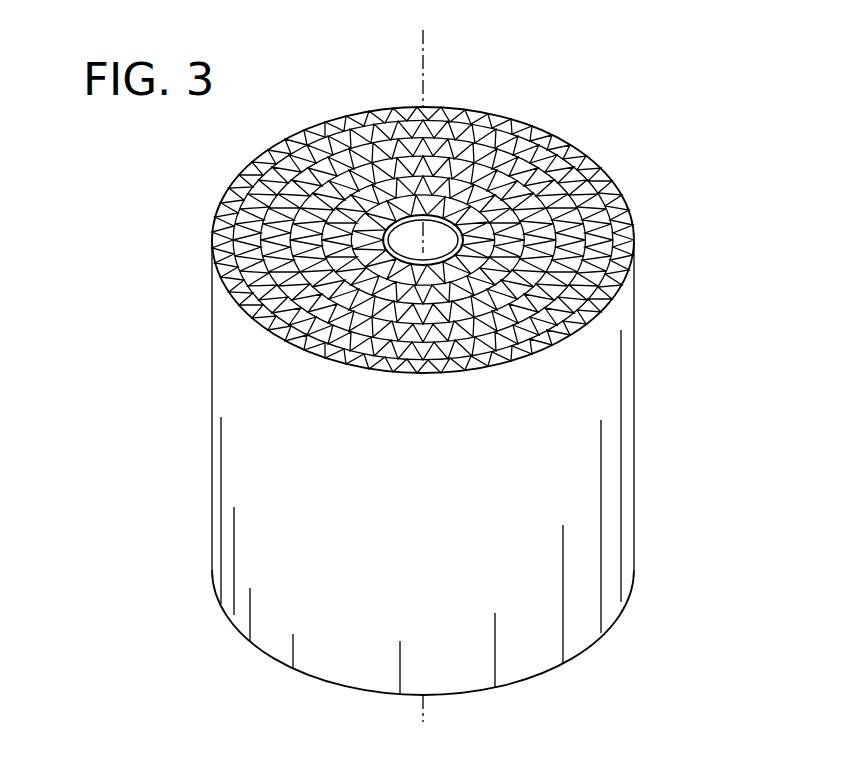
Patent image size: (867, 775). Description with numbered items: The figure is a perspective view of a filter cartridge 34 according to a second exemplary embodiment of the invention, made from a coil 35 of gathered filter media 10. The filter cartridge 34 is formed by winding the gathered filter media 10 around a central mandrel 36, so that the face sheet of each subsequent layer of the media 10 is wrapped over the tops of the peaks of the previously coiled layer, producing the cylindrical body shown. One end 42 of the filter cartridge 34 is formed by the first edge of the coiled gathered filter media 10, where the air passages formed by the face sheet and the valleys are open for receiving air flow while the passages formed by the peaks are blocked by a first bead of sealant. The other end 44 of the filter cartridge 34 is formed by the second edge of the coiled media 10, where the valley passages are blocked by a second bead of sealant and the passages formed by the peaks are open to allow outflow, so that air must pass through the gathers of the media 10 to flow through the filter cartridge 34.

The gathered filter media 10 is at (520, 124).
The filter cartridge 34 is at (658, 381).
The coil 35 is at (592, 504).
The central mandrel 36 is at (441, 229).
The one end of the filter cartridge 42 is at (545, 677).
The other end of the filter cartridge 44 is at (586, 162).